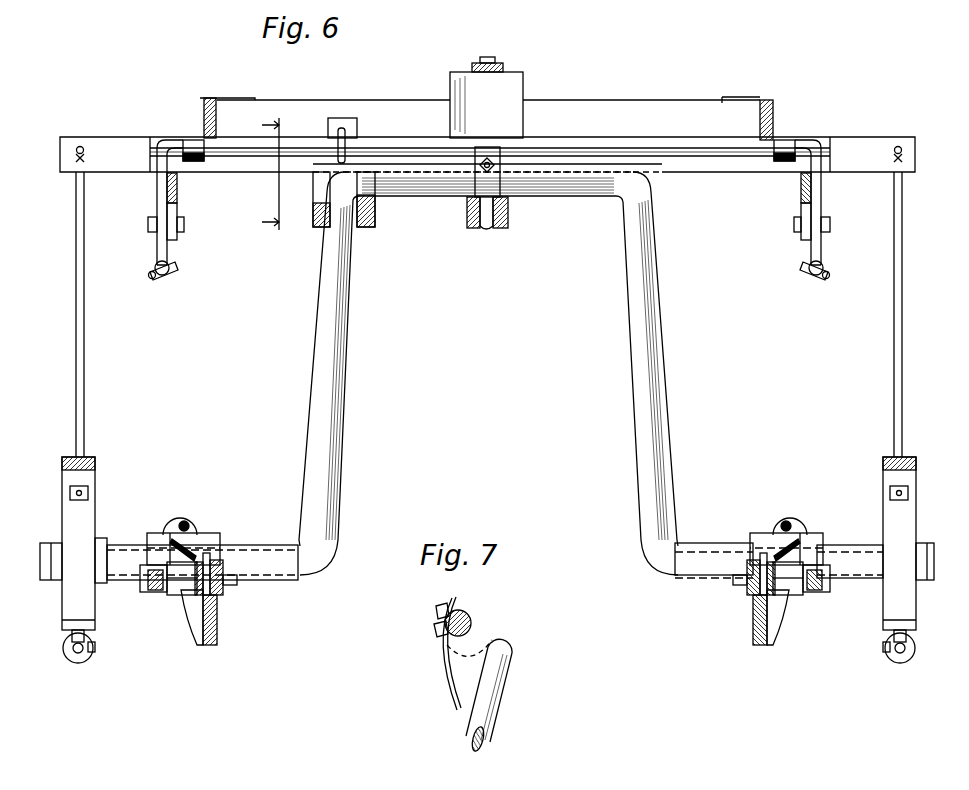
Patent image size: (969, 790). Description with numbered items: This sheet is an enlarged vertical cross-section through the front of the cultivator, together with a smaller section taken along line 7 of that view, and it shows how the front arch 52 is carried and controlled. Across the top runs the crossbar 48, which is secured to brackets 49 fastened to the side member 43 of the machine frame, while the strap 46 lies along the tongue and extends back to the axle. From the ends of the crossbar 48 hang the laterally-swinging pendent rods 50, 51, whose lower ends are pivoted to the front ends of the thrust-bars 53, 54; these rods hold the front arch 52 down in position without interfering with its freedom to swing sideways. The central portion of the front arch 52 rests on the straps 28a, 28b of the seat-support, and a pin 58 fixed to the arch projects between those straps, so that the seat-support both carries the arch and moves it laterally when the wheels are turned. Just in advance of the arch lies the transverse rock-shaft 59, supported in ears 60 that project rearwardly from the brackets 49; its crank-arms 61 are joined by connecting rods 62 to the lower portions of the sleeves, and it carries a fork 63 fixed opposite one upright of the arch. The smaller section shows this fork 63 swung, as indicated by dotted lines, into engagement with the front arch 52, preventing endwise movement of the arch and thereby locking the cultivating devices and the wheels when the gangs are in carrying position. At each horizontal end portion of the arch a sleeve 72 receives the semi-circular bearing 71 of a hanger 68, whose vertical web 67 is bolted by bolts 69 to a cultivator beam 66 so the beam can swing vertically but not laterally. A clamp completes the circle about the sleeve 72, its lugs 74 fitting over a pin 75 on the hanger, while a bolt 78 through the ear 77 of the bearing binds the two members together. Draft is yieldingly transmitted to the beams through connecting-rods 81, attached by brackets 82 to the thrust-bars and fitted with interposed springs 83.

In FIG. 6, the section line 7— 7 is at (272, 176).
In FIG. 6, the strap 28a is at (505, 230).
In FIG. 6, the strap 28b is at (470, 230).
In FIG. 6, the side member 43 is at (214, 104).
In FIG. 6, the strap 46 is at (505, 70).
In FIG. 6, the crossbar 48 is at (98, 140).
In FIG. 6, the bracket 49 is at (186, 140).
In FIG. 6, the pendent rod 50 is at (898, 312).
In FIG. 6, the pendent rod 51 is at (88, 362).
In FIG. 6, the front arch 52 is at (349, 306).
In FIG. 7, the front arch 52 is at (498, 710).
In FIG. 6, the thrust-bar 53 is at (882, 470).
In FIG. 6, the thrust-bar 54 is at (96, 468).
In FIG. 6, the pin 58 is at (485, 232).
In FIG. 6, the rock-shaft 59 is at (600, 146).
In FIG. 7, the rock-shaft 59 is at (470, 616).
In FIG. 6, the ear 60 is at (197, 161).
In FIG. 6, the crank-arm 61 is at (155, 200).
In FIG. 6, the connecting rod 62 is at (172, 266).
In FIG. 6, the fork 63 is at (375, 222).
In FIG. 7, the fork 63 is at (472, 657).
In FIG. 6, the beam 66 is at (185, 605).
In FIG. 6, the vertical web 67 is at (217, 627).
In FIG. 6, the hanger 68 is at (190, 622).
In FIG. 6, the bolt 69 is at (237, 587).
In FIG. 6, the semi-circular bearing 71 is at (158, 540).
In FIG. 6, the sleeve 72 is at (268, 556).
In FIG. 6, the lug 74 is at (150, 588).
In FIG. 6, the pin 75 is at (222, 552).
In FIG. 6, the ear 77 is at (215, 540).
In FIG. 6, the bolt 78 is at (192, 524).
In FIG. 6, the connecting-rod 81 is at (96, 647).
In FIG. 6, the bracket 82 is at (92, 540).
In FIG. 6, the spring 83 is at (89, 660).